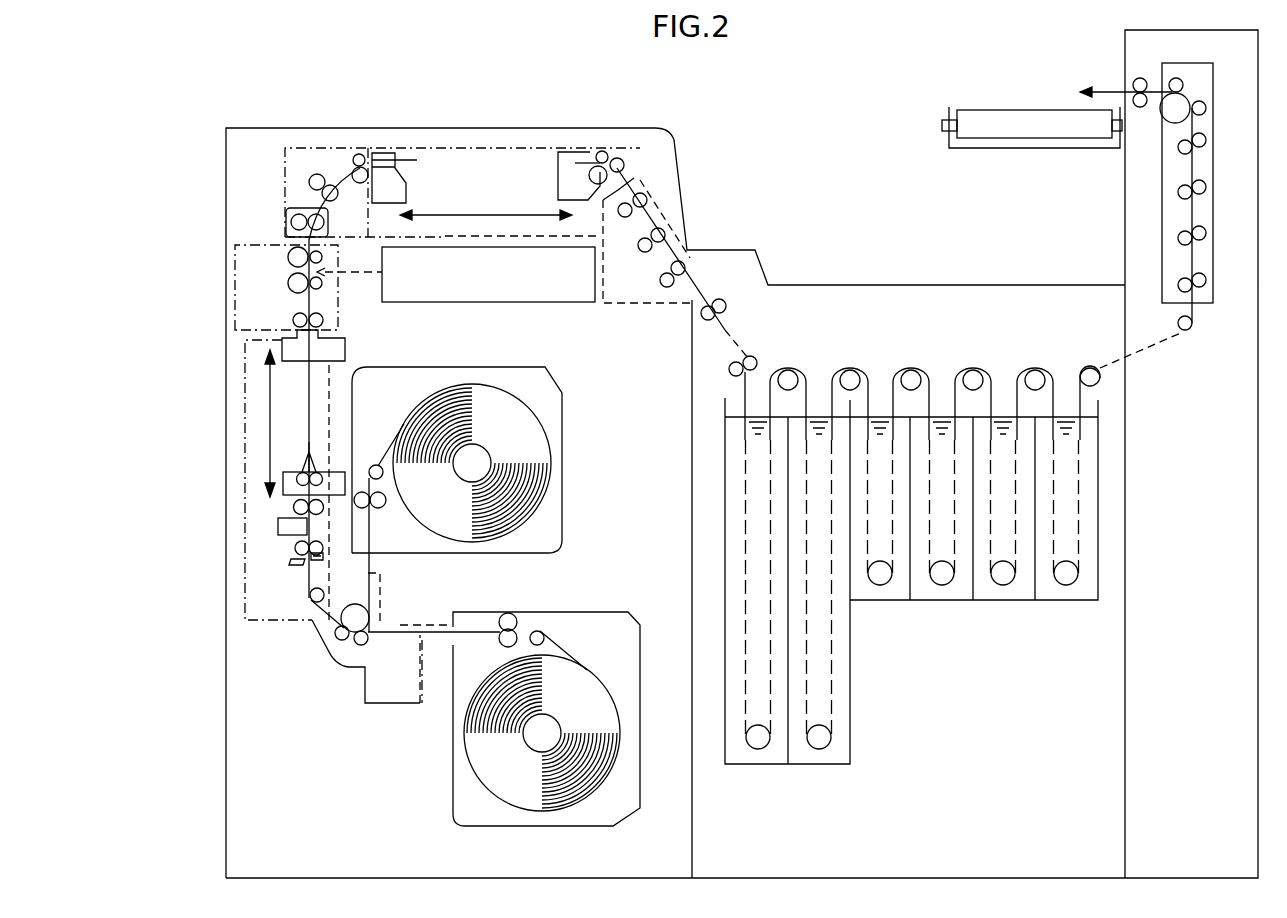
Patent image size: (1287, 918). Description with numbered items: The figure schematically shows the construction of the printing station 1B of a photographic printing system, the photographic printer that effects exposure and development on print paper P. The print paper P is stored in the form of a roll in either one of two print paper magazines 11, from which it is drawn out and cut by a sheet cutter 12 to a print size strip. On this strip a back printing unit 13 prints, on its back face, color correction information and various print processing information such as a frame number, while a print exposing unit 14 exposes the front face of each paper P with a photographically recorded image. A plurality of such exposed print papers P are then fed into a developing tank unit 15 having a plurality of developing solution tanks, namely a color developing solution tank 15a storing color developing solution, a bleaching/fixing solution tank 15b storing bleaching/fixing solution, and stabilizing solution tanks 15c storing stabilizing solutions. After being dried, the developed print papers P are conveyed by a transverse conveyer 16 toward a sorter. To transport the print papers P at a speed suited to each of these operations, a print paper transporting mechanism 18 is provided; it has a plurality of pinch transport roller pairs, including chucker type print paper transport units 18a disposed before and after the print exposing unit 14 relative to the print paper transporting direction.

The printing station 1B is at (182, 127).
The print paper magazine 11 is at (560, 505).
The sheet cutter 12 is at (290, 563).
The back printing unit 13 is at (277, 525).
The print exposing unit 14 is at (518, 290).
The developing tank unit 15 is at (912, 599).
The color developing solution tank 15a is at (765, 755).
The bleaching/fixing solution tank 15b is at (838, 753).
The stabilizing solution tank 15c is at (895, 592).
The transverse conveyer 16 is at (995, 113).
The print paper transporting mechanism 18 is at (308, 182).
The chucker type print paper transport unit 18a is at (510, 147).
The print paper P is at (288, 217).